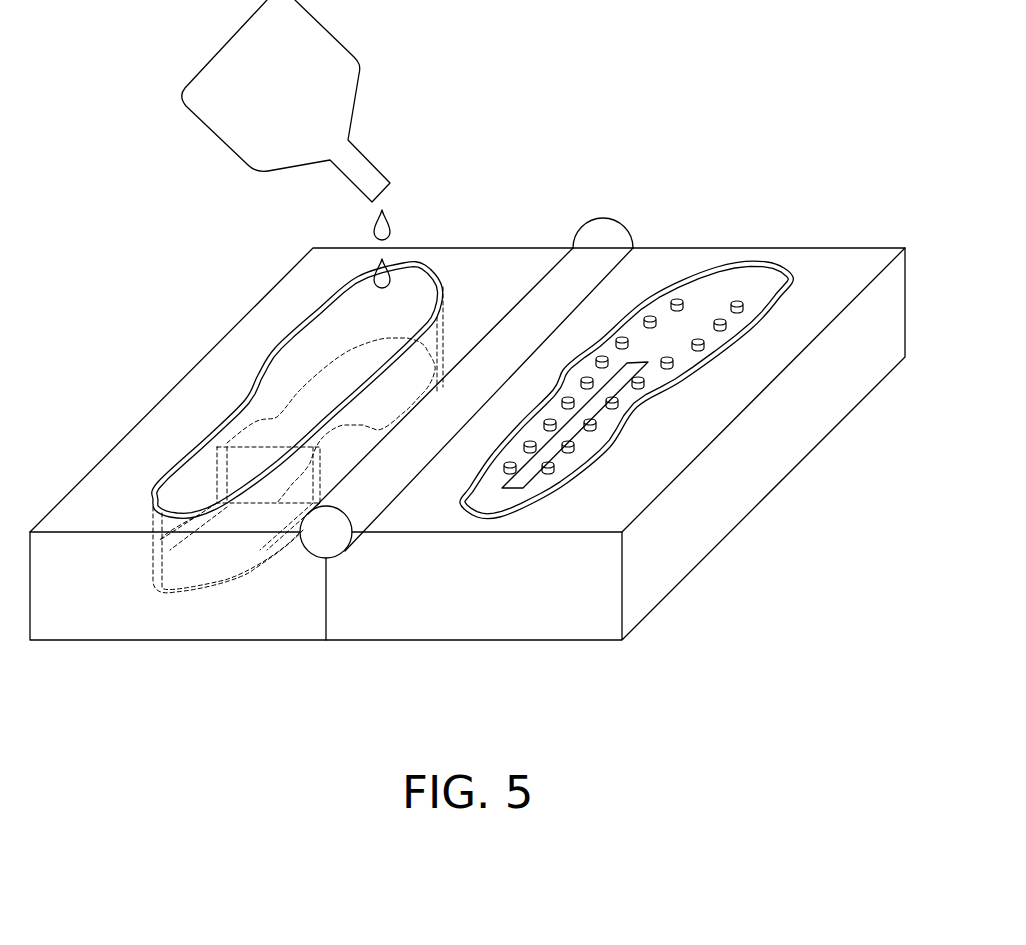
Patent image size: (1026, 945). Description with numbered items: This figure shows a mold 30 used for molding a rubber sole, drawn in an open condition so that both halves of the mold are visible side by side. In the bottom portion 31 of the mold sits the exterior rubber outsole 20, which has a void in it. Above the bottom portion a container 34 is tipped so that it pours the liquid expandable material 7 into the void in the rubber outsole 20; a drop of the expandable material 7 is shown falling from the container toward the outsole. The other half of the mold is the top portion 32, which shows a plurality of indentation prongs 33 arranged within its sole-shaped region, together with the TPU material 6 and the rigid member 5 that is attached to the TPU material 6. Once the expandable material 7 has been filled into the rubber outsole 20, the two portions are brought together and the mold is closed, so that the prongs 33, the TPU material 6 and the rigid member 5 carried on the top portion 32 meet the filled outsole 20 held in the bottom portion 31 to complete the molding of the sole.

The container 34 is at (213, 52).
The mold 30 is at (526, 122).
The liquid expandable material 7 is at (372, 218).
The indentation prongs 33 is at (678, 300).
The exterior rubber outsole 20 is at (153, 555).
The bottom portion 31 is at (298, 641).
The top portion 32 is at (444, 662).
The rigid member 5 is at (512, 482).
The TPU material 6 is at (540, 503).